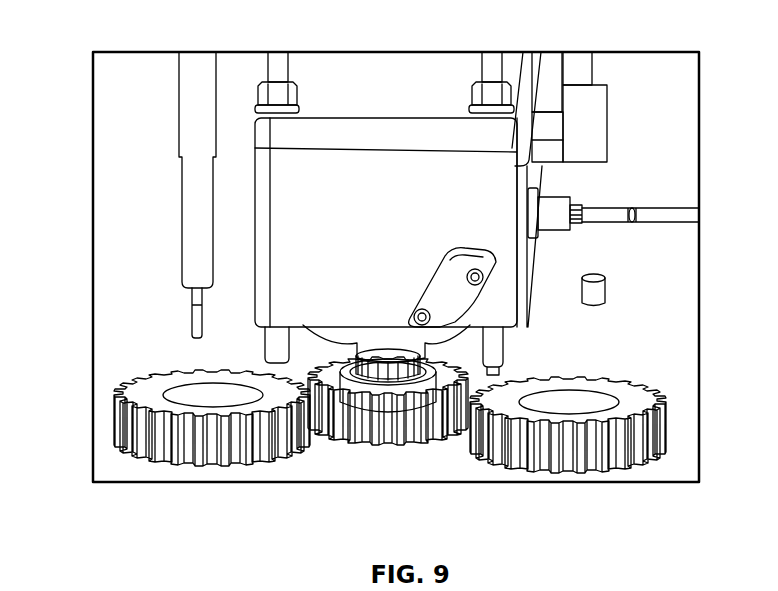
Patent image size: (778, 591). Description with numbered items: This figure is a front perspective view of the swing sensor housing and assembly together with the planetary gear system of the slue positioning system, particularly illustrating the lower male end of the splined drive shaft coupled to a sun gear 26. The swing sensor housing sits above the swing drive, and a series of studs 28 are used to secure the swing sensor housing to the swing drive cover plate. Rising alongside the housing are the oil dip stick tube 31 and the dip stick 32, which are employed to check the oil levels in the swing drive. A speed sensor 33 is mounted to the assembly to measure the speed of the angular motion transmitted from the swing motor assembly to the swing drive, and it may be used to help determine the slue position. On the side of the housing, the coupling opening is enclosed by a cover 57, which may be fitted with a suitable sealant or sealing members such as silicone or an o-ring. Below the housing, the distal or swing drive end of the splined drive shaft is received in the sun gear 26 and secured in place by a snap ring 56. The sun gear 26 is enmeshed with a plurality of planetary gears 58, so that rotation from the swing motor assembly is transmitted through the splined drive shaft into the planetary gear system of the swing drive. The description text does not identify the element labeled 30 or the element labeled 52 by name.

The sun gear 26 is at (337, 453).
The studs 28 is at (279, 58).
The mounting block 30 is at (608, 125).
The oil dip stick tube 31 is at (178, 143).
The dip stick 32 is at (191, 322).
The speed sensor 33 is at (606, 202).
The hub 52 is at (386, 408).
The snap ring 56 is at (443, 406).
The cover 57 is at (474, 291).
The planetary gears 58 is at (115, 430).